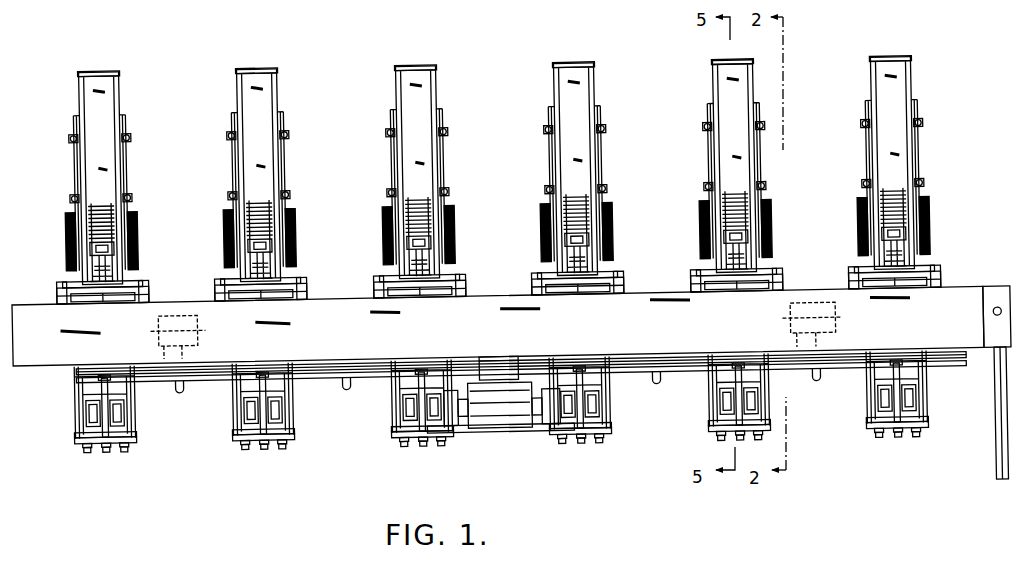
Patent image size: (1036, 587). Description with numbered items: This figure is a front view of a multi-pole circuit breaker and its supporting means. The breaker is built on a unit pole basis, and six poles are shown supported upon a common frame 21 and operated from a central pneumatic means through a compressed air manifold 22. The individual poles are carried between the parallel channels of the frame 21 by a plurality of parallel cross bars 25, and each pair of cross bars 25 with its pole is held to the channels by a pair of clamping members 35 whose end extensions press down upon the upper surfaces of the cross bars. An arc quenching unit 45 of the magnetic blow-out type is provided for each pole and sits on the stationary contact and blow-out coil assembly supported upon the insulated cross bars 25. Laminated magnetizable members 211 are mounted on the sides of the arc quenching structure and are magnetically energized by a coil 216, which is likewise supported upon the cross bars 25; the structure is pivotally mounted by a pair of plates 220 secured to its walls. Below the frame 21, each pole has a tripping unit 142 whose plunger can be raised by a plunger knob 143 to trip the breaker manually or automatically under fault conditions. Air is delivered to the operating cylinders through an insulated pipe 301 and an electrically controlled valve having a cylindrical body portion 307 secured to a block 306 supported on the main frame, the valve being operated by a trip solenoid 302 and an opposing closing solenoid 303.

The common frame 21 is at (955, 305).
The compressed air manifold 22 is at (348, 384).
The cross bars 25 is at (141, 301).
The clamping members 35 is at (139, 284).
The arc quenching unit 45 is at (115, 66).
The tripping unit 142 is at (122, 412).
The plunger knob 143 is at (106, 454).
The magnetizable member 211 is at (125, 153).
The coil 216 is at (137, 216).
The plates 220 is at (116, 256).
The insulated pipe 301 is at (82, 394).
The trip solenoid 302 is at (467, 440).
The closing solenoid 303 is at (548, 438).
The block 306 is at (498, 368).
The cylindrical body portion 307 is at (505, 441).